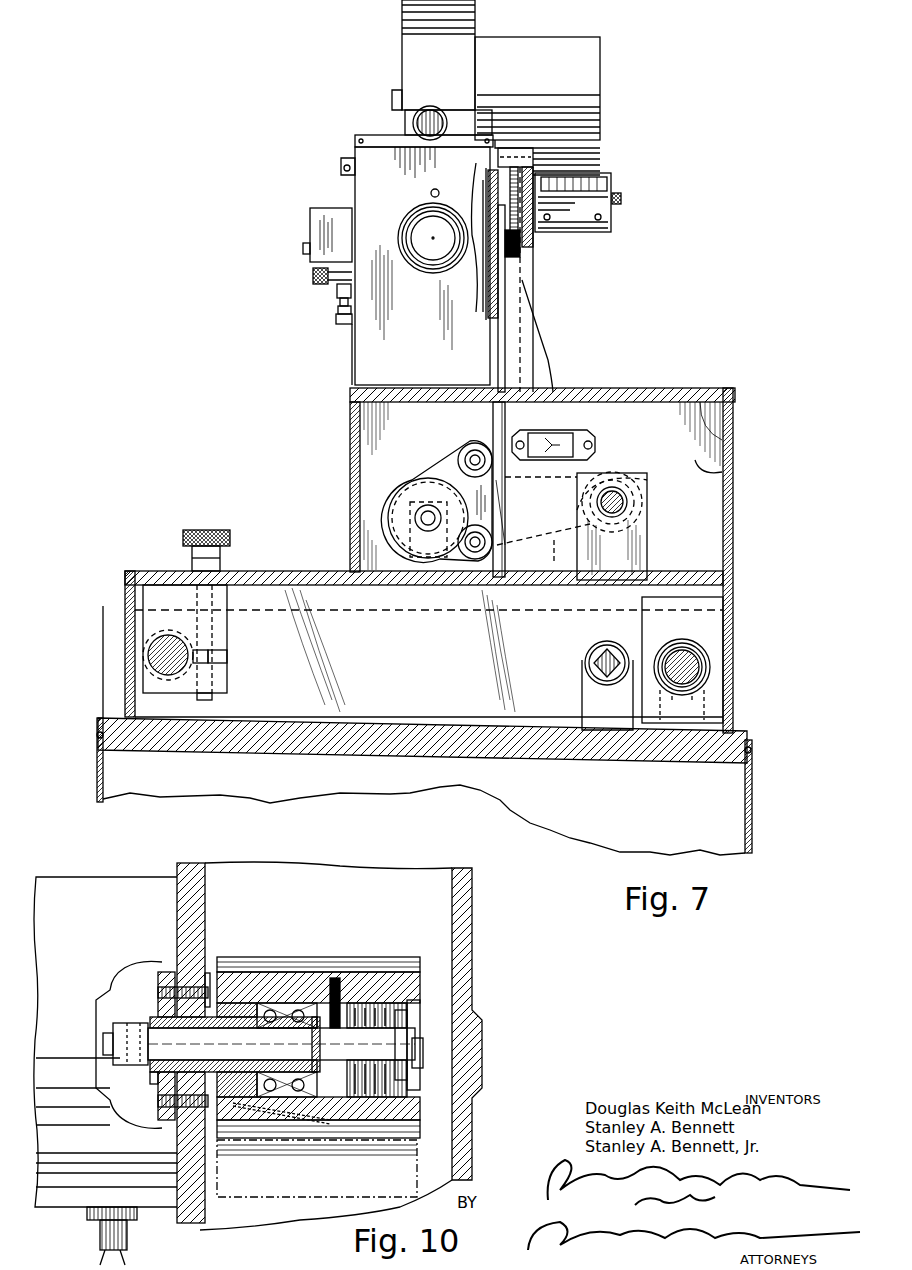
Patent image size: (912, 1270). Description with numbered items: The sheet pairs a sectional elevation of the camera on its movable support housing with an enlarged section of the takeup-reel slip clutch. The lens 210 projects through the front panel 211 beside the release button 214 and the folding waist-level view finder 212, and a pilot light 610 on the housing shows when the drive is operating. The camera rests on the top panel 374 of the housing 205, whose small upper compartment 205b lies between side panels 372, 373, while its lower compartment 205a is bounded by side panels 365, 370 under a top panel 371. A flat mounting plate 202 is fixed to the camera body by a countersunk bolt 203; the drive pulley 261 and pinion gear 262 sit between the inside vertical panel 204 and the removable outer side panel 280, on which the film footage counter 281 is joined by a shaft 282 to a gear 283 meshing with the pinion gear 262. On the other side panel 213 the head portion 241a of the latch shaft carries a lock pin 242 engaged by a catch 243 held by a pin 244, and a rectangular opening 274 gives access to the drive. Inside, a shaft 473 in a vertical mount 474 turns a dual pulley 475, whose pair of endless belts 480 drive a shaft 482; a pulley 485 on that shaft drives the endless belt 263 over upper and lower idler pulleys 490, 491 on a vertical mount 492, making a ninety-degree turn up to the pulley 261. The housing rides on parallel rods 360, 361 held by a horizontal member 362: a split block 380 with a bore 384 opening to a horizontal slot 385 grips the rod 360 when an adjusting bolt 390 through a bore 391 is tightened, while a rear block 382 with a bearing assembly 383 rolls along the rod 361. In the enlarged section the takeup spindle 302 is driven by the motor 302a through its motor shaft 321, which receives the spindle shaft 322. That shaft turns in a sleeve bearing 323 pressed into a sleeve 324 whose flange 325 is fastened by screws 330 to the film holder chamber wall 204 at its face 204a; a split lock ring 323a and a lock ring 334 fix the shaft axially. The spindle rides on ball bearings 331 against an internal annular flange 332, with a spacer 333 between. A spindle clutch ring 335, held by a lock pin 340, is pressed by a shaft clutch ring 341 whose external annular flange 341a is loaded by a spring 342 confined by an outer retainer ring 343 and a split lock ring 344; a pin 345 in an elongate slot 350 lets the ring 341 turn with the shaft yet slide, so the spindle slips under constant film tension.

In FIG. 7, the takeup spindle drive motor 302a is at (525, 37).
In FIG. 10, the takeup spindle drive motor 302a is at (62, 862).
In FIG. 7, the gear 283 is at (508, 148).
In FIG. 7, the pilot light 610 is at (342, 162).
In FIG. 7, the front panel 211 is at (360, 182).
In FIG. 7, the waist-level view finder 212 is at (335, 200).
In FIG. 7, the release button 214 is at (432, 190).
In FIG. 7, the lens 210 is at (425, 205).
In FIG. 7, the housing 205 is at (488, 180).
In FIG. 7, the countersunk bolt 203 is at (474, 280).
In FIG. 7, the mounting plate 202 is at (483, 305).
In FIG. 7, the inside vertical camera housing panel 204 is at (487, 318).
In FIG. 10, the inside vertical camera housing panel 204 is at (183, 868).
In FIG. 7, the drive pulley 261 is at (530, 275).
In FIG. 7, the pinion gear 262 is at (522, 252).
In FIG. 7, the shaft 282 is at (523, 242).
In FIG. 7, the outer side panel 280 is at (535, 298).
In FIG. 7, the film footage counter 281 is at (612, 222).
In FIG. 7, the rectangular opening 274 is at (312, 278).
In FIG. 7, the head portion 241a is at (338, 292).
In FIG. 7, the lock pin 242 is at (340, 303).
In FIG. 7, the catch 243 is at (340, 312).
In FIG. 7, the pin 244 is at (340, 320).
In FIG. 7, the side panel 213 is at (352, 350).
In FIG. 7, the side panel 372 is at (352, 410).
In FIG. 7, the top panel 374 is at (712, 388).
In FIG. 7, the side panel 373 is at (733, 446).
In FIG. 7, the upper compartment 205b is at (722, 468).
In FIG. 7, the top panel 371 is at (318, 572).
In FIG. 7, the upper idler pulley 490 is at (476, 443).
In FIG. 7, the pulley 485 is at (398, 500).
In FIG. 7, the shaft 482 is at (428, 505).
In FIG. 7, the lower idler pulley 491 is at (470, 560).
In FIG. 7, the endless belt 263 is at (460, 476).
In FIG. 7, the vertical mount 492 is at (496, 550).
In FIG. 7, the endless belts 480 is at (543, 527).
In FIG. 7, the dual pulley 475 is at (618, 480).
In FIG. 7, the shaft 473 is at (630, 496).
In FIG. 7, the vertical mount 474 is at (640, 530).
In FIG. 7, the lower compartment 205a is at (400, 668).
In FIG. 7, the side panel 365 is at (126, 625).
In FIG. 7, the horizontal member 362 is at (110, 610).
In FIG. 7, the adjusting bolt 390 is at (222, 556).
In FIG. 7, the split block 380 is at (220, 626).
In FIG. 7, the bore 391 is at (215, 595).
In FIG. 7, the support rod 360 is at (160, 650).
In FIG. 7, the horizontal slot 385 is at (210, 658).
In FIG. 7, the bore 384 is at (200, 667).
In FIG. 7, the rear block 382 is at (640, 604).
In FIG. 7, the side panel 370 is at (733, 625).
In FIG. 7, the bearing assembly 383 is at (685, 645).
In FIG. 7, the support rod 361 is at (698, 670).
In FIG. 10, the plate surface 204a is at (208, 890).
In FIG. 10, the spring 342 is at (420, 1000).
In FIG. 10, the spacer 333 is at (250, 1060).
In FIG. 10, the motor shaft 321 is at (120, 1025).
In FIG. 10, the lock ring 334 is at (315, 1033).
In FIG. 10, the pin 345 is at (358, 1035).
In FIG. 10, the ball bearings 331 is at (265, 990).
In FIG. 10, the internal annular flange 332 is at (300, 1000).
In FIG. 10, the lock pin 340 is at (338, 980).
In FIG. 10, the external annular flange 341a is at (365, 1003).
In FIG. 10, the shaft clutch ring 341 is at (368, 1097).
In FIG. 10, the spindle clutch ring 335 is at (300, 1115).
In FIG. 10, the takeup spindle 302 is at (418, 1000).
In FIG. 10, the outer retainer ring 343 is at (410, 1015).
In FIG. 10, the split lock ring 344 is at (410, 1032).
In FIG. 10, the elongate slot 350 is at (436, 1053).
In FIG. 10, the split lock ring 323a is at (160, 1015).
In FIG. 10, the shaft 322 is at (170, 1020).
In FIG. 10, the sleeve bearing 323 is at (160, 1070).
In FIG. 10, the sleeve 324 is at (152, 1078).
In FIG. 10, the screws 330 is at (157, 1101).
In FIG. 10, the flange 325 is at (160, 1122).